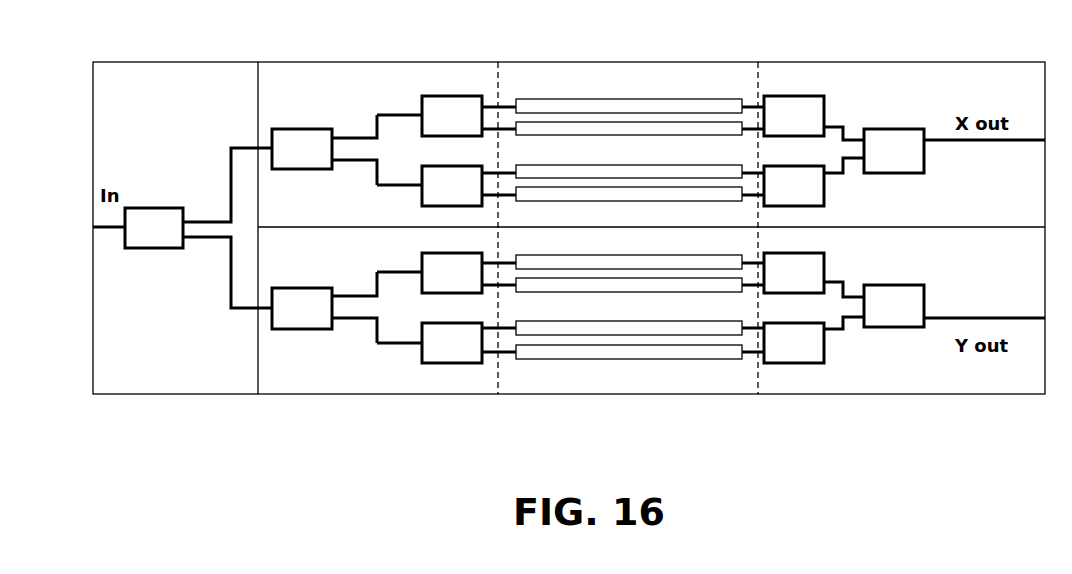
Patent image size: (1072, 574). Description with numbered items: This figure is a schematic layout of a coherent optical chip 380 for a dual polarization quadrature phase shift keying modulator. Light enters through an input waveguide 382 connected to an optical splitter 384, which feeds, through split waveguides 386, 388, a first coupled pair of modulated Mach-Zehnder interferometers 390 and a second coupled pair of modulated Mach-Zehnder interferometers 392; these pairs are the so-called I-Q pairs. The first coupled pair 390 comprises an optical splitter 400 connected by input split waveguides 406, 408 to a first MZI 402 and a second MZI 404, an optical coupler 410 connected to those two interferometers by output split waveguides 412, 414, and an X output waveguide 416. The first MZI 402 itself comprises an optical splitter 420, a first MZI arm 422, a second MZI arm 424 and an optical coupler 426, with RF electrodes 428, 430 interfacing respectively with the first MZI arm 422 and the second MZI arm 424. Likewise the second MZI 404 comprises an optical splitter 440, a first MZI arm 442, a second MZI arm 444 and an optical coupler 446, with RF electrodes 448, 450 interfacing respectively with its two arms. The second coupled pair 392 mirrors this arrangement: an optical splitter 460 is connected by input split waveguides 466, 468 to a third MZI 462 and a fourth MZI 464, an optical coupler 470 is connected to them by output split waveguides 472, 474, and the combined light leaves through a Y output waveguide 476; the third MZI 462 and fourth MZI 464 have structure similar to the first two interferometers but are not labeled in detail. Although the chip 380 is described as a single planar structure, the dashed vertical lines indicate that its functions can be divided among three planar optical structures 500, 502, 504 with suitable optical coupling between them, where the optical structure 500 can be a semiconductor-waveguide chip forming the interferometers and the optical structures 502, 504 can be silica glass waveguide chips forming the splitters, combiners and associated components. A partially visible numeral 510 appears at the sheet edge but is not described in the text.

The coherent optical chip 380 is at (234, 396).
The input waveguide 382 is at (103, 233).
The optical splitter 384 is at (162, 207).
The split waveguide 386 is at (229, 252).
The split waveguide 388 is at (229, 160).
The first coupled pair of modulated Mach-Zehnder interferometers 390 is at (255, 348).
The second coupled pair of modulated Mach-Zehnder interferometers 392 is at (258, 86).
The optical splitter 400 is at (283, 171).
The first MZI 402 is at (401, 198).
The second MZI 404 is at (406, 90).
The input split waveguide 406 is at (372, 178).
The input split waveguide 408 is at (342, 146).
The optical coupler 410 is at (908, 128).
The output split waveguide 412 is at (836, 176).
The output split waveguide 414 is at (835, 126).
The X output waveguide 416 is at (970, 143).
The optical splitter 420 is at (429, 95).
The first MZI arm 422 is at (503, 133).
The second MZI arm 424 is at (500, 100).
The optical coupler 426 is at (782, 95).
The RF electrode 428 is at (580, 136).
The RF electrode 430 is at (657, 99).
The optical splitter 440 is at (443, 165).
The first MZI arm 442 is at (503, 199).
The second MZI arm 444 is at (750, 170).
The optical coupler 446 is at (782, 207).
The RF electrode 448 is at (625, 202).
The RF electrode 450 is at (645, 164).
The optical splitter 460 is at (280, 287).
The third MZI 462 is at (404, 360).
The fourth MZI 464 is at (406, 252).
The input split waveguide 466 is at (352, 316).
The input split waveguide 468 is at (373, 295).
The optical coupler 470 is at (890, 284).
The output split waveguide 472 is at (828, 342).
The output split waveguide 474 is at (829, 280).
The Y output waveguide 476 is at (957, 316).
The planar optical structure 500 is at (556, 397).
The planar optical structure 502 is at (288, 62).
The planar optical structure 504 is at (927, 62).
The partially visible numeral 510 is at (328, 571).